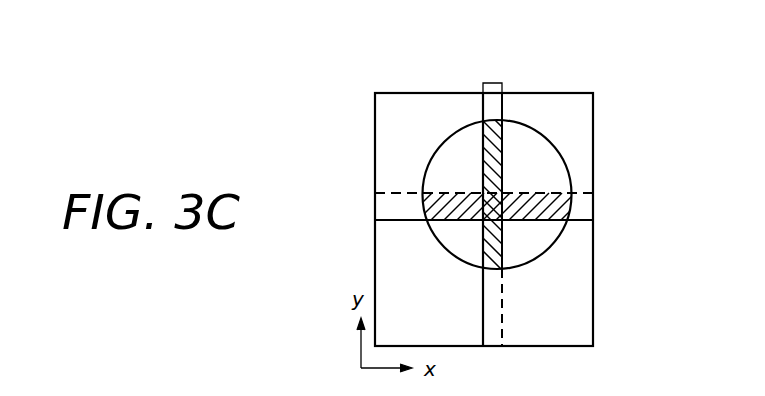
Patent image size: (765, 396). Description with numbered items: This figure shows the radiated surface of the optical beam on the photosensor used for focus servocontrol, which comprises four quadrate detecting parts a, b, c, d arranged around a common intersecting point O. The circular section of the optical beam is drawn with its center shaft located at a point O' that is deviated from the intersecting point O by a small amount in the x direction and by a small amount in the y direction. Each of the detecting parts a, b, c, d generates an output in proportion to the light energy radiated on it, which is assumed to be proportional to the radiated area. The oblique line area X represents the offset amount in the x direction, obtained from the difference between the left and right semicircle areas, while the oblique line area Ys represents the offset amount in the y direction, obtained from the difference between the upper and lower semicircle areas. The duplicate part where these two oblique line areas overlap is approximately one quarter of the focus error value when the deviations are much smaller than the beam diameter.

The detecting part a is at (430, 117).
The detecting part b is at (560, 103).
The detecting part c is at (568, 296).
The detecting part d is at (402, 271).
The oblique line area Xs X is at (505, 135).
The offset amount in direction y Ys is at (452, 224).
The intersecting point O is at (469, 240).
The center shaft point O' is at (531, 240).